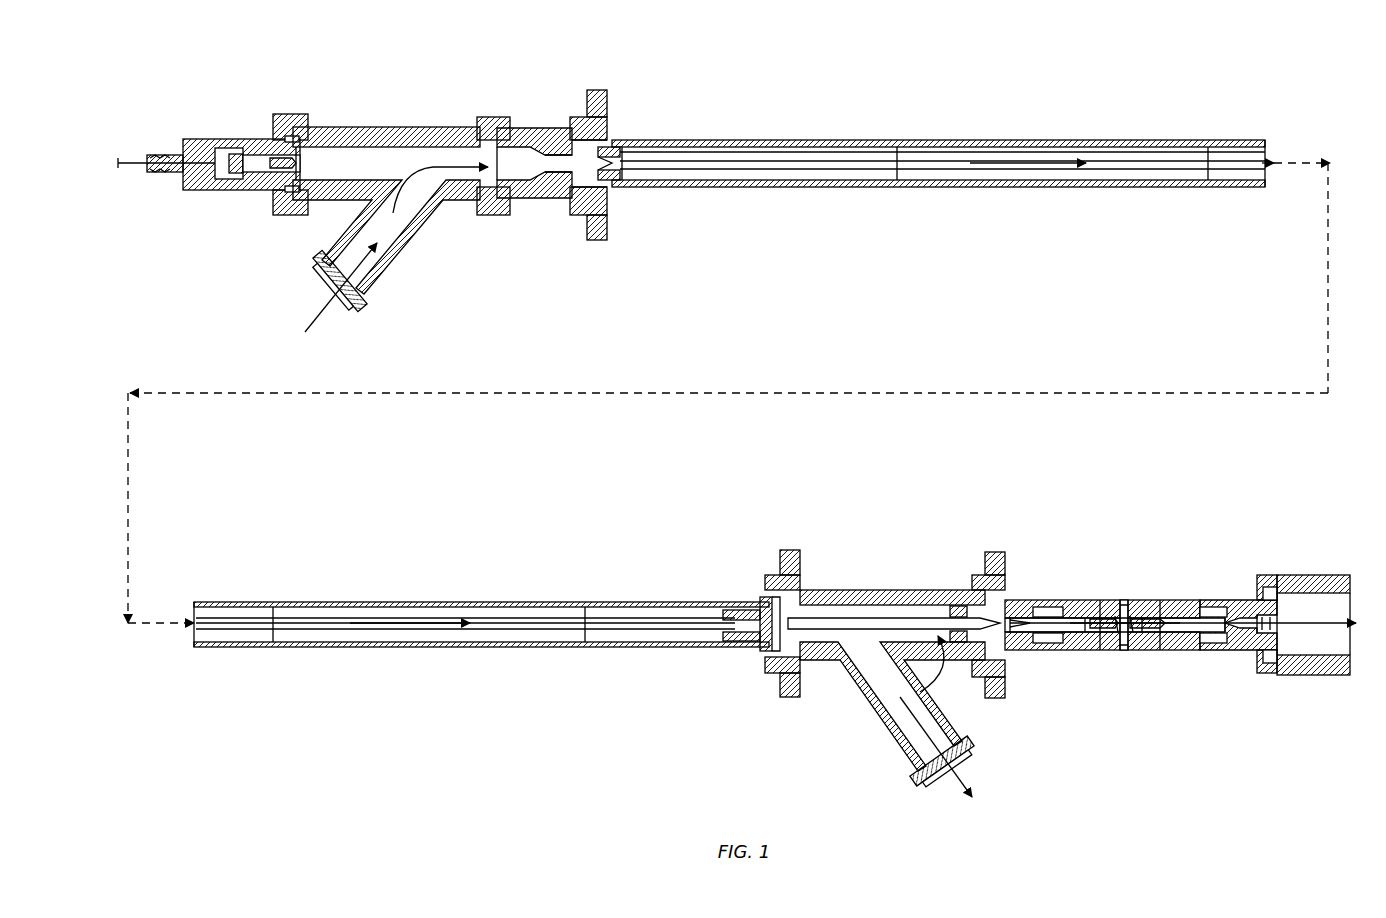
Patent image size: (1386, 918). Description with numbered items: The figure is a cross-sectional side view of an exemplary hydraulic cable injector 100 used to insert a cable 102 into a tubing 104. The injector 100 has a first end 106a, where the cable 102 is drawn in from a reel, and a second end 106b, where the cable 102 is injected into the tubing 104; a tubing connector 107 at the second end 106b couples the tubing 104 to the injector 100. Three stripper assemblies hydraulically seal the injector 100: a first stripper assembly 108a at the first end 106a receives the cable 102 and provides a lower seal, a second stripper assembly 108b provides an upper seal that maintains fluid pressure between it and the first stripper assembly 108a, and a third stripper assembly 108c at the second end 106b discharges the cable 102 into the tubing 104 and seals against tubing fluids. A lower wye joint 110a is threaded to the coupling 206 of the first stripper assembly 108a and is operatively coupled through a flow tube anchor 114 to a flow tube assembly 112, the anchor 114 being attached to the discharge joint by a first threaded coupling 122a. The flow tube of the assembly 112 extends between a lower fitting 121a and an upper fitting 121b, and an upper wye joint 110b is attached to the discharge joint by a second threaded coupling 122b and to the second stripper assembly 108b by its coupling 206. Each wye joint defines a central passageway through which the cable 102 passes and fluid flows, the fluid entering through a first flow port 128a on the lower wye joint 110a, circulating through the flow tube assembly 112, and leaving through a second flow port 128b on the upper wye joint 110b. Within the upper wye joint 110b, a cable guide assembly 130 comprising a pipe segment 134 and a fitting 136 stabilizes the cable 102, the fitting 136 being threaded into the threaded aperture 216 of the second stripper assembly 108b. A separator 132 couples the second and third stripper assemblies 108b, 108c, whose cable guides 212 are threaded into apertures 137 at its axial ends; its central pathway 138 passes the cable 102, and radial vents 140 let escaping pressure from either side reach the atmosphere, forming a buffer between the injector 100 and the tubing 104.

The hydraulic cable injector 100 is at (200, 80).
The cable 102 is at (128, 160).
The tubing 104 is at (1327, 575).
The first end 106a is at (168, 198).
The second end 106b is at (1260, 682).
The tubing connector 107 is at (1272, 575).
The first stripper assembly 108a is at (240, 138).
The second stripper assembly 108b is at (1102, 614).
The third stripper assembly 108c is at (1240, 596).
The lower wye joint 110a is at (378, 200).
The upper wye joint 110b is at (900, 661).
The flow tube assembly 112 is at (943, 161).
The flow tube anchor 114 is at (537, 130).
The lower fitting 121a is at (615, 142).
The upper fitting 121b is at (745, 642).
The first threaded coupling 122a is at (595, 90).
The second threaded coupling 122b is at (790, 550).
The first flow port 128a is at (355, 233).
The second flow port 128b is at (882, 688).
The cable guide assembly 130 is at (945, 655).
The separator 132 is at (1136, 604).
The pipe segment 134 is at (856, 624).
The fitting 136 is at (972, 602).
The apertures 137 is at (1098, 617).
The central pathway 138 is at (1093, 650).
The vents 140 is at (1124, 604).
The coupling 206 is at (300, 118).
The cable guide 212 is at (1085, 650).
The threaded aperture 216 is at (1012, 650).